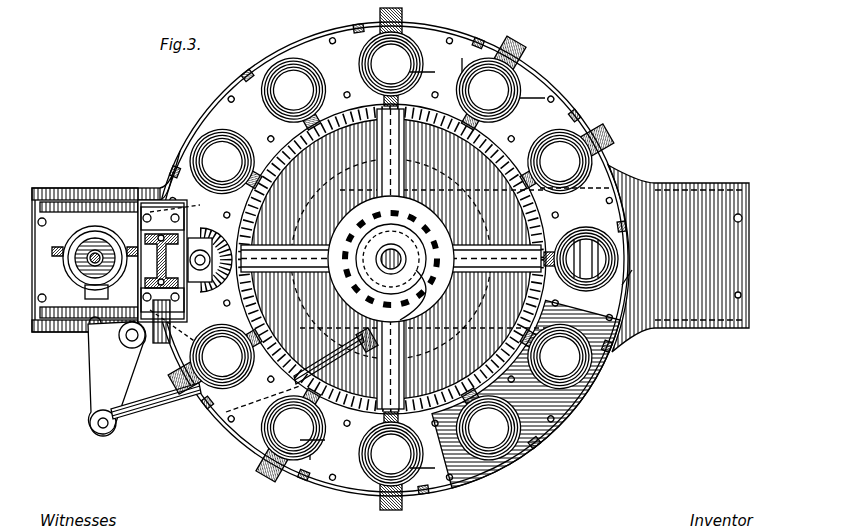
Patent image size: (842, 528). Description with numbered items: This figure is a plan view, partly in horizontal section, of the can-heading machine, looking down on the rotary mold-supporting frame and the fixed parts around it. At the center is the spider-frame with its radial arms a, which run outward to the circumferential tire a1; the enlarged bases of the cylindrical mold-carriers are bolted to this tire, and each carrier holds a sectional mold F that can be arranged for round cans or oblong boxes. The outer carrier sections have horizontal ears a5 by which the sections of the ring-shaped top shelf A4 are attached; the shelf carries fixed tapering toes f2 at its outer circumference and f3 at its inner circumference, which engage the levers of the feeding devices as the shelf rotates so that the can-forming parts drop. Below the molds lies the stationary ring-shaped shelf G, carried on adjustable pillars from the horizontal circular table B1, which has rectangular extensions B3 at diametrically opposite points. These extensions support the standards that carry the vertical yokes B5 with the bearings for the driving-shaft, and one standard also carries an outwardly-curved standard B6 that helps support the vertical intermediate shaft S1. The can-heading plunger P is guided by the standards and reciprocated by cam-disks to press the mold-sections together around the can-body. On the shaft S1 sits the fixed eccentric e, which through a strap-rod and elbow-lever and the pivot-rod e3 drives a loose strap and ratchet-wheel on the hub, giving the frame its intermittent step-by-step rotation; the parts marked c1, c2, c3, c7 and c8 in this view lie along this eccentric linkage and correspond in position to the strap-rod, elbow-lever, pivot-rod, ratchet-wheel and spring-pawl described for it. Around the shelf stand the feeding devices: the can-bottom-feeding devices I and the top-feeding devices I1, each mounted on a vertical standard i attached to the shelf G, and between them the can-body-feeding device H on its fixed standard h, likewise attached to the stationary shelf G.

The horizontal circular table B1 is at (398, 259).
The radial arms a is at (391, 259).
The ring-shaped top shelf A4 is at (387, 247).
The ratchet wheel c8 is at (372, 290).
The pawl c7 is at (419, 295).
The inner rod c3 is at (336, 356).
The stationary ring-shaped shelf G is at (222, 452).
The horizontal ears a5 is at (540, 455).
The rectangular extensions B3 is at (390, 253).
The fixed eccentric e is at (95, 258).
The vertical intermediate shaft S1 is at (78, 258).
The block c1 is at (85, 292).
The outwardly-curved standard B6 is at (154, 261).
The can-heading plunger P is at (210, 270).
The vertical yoke B5 is at (183, 272).
The link lever c2 is at (116, 372).
The pivot-rod e3 is at (156, 411).
The vertical standard i is at (386, 259).
The fixed standard h is at (392, 257).
The outer tapering toes f2 is at (396, 256).
The sectional mold F is at (398, 259).
The inner tapering toes f3 is at (360, 256).
The can-body-feeding device H is at (422, 268).
The can-bottom-feeding device I is at (422, 273).
The can-top-feeding device I1 is at (419, 294).
The circumferential tire a1 is at (630, 285).